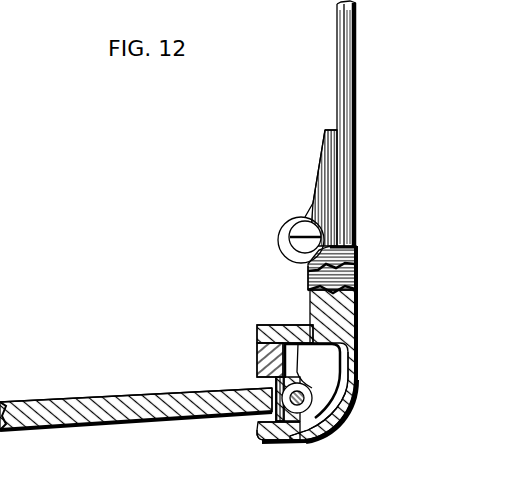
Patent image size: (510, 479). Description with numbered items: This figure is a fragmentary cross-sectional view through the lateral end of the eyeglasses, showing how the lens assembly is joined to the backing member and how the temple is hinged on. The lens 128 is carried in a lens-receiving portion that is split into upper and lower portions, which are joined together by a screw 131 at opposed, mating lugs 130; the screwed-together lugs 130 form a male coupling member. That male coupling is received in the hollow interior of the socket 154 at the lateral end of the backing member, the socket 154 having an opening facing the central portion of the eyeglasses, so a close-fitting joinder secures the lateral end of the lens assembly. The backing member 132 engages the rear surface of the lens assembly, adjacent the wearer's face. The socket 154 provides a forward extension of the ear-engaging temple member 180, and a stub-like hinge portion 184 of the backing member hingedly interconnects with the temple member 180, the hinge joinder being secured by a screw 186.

The lens 128 is at (36, 403).
The mating lugs 130 is at (308, 330).
The screw 131 is at (266, 428).
The backing member 132 is at (258, 346).
The socket 154 is at (328, 410).
The temple member 180 is at (346, 93).
The stub-like hinge portion 184 is at (300, 268).
The screw 186 is at (298, 218).